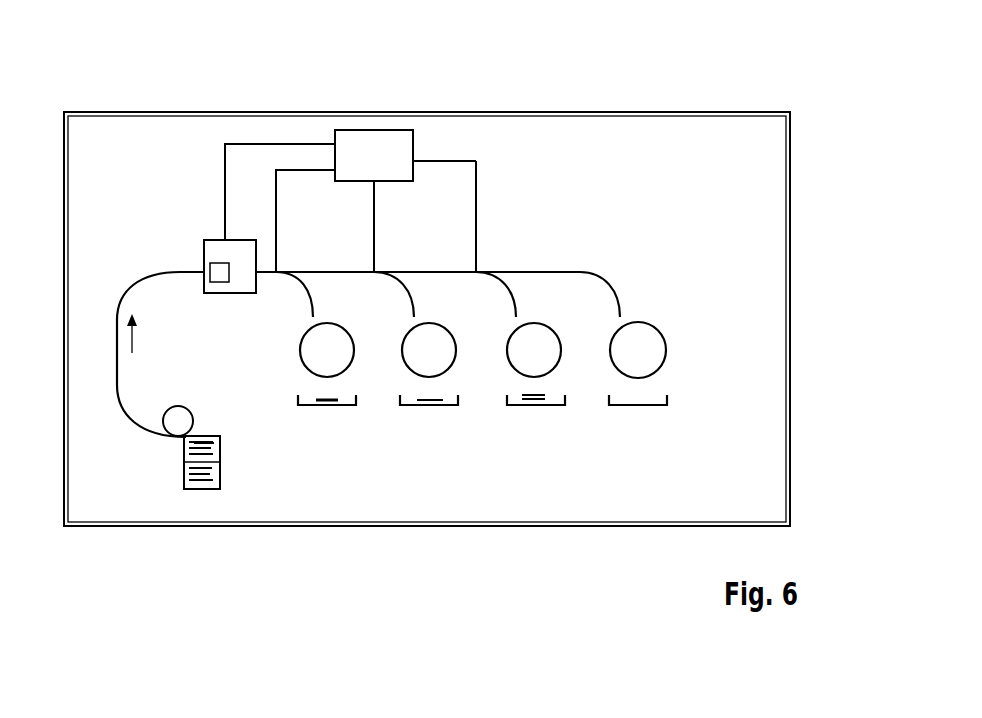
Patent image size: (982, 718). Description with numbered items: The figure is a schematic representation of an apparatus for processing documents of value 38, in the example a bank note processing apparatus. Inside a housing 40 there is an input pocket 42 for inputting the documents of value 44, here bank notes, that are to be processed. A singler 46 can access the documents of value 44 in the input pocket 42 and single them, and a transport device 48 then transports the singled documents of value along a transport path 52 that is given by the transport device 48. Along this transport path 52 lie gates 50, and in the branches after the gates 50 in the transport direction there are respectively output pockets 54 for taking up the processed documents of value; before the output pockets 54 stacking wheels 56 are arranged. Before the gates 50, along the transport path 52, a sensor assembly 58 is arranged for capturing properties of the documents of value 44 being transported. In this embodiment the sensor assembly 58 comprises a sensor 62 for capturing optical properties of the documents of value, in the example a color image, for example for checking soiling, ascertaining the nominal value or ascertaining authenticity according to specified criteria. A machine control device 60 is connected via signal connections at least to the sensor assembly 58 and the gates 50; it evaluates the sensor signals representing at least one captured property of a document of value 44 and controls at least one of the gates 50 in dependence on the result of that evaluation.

The apparatus for processing documents of value 38 is at (118, 90).
The housing 40 is at (163, 113).
The input pocket 42 is at (220, 482).
The documents of value 44 is at (328, 395).
The singler 46 is at (172, 408).
The transport device 48 is at (132, 428).
The gates 50 is at (280, 268).
The transport path 52 is at (138, 262).
The output pockets 54 is at (308, 405).
The stacking wheels 56 is at (344, 335).
The sensor assembly 58 is at (243, 236).
The machine control device 60 is at (353, 133).
The sensor 62 is at (208, 229).